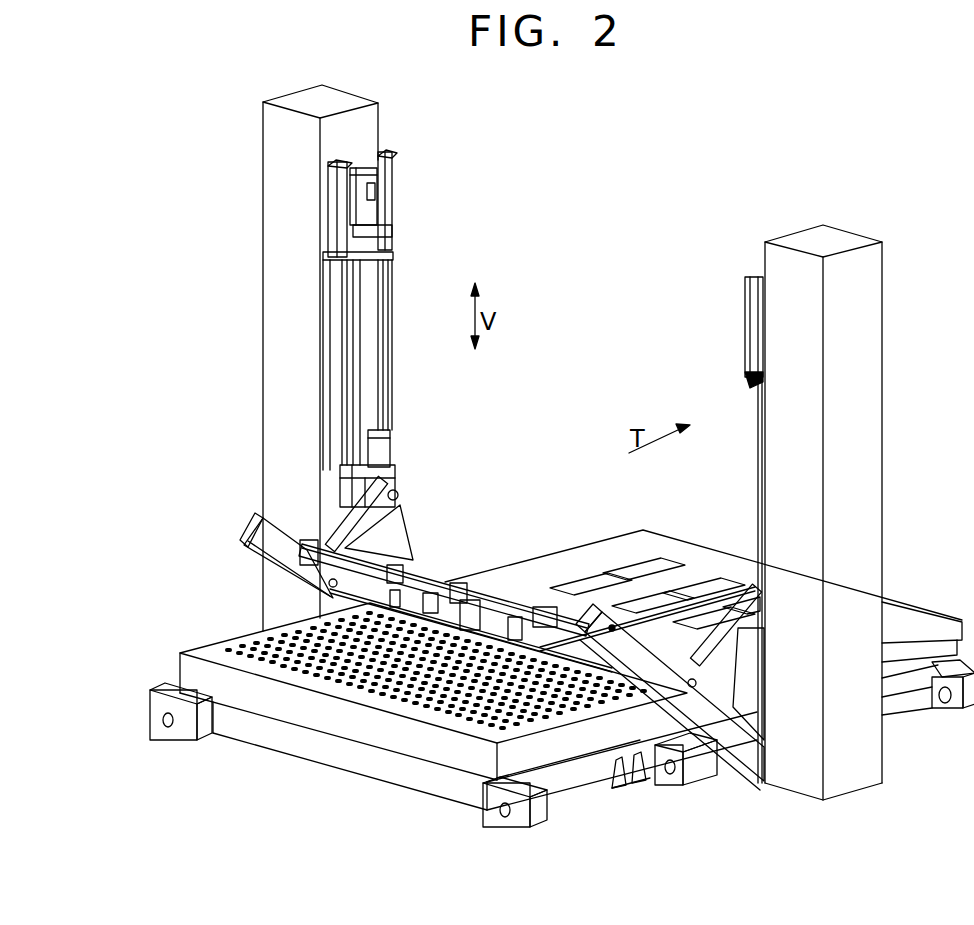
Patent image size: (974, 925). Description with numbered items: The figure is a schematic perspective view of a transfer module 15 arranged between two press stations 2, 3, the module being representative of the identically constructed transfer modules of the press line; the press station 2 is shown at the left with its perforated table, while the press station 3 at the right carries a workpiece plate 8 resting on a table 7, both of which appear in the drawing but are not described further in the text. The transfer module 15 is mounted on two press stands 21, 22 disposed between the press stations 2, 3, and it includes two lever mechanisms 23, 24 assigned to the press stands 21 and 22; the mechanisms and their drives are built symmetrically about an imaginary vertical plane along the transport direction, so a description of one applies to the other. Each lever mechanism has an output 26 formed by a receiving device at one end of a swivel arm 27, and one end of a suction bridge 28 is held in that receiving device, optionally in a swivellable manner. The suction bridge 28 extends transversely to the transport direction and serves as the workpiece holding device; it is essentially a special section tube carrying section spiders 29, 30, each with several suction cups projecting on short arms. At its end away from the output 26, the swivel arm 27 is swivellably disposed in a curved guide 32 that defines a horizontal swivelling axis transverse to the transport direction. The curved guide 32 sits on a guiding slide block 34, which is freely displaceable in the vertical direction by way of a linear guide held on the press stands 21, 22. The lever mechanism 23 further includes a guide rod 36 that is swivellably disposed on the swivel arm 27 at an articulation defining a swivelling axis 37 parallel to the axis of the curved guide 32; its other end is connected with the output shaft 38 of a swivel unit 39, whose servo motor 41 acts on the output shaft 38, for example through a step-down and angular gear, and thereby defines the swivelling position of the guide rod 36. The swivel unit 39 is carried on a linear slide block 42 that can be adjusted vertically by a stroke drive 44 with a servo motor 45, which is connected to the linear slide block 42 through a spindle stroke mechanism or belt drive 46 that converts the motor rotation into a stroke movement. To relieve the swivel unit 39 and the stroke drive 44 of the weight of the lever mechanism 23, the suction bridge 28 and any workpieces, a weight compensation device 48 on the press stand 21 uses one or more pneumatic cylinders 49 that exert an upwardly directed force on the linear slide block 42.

The press station 2 is at (200, 604).
The press station 3 is at (580, 486).
The perforated work table 7 is at (307, 710).
The workpiece plate 8 is at (709, 622).
The transfer module 15 is at (116, 442).
The press stand 21 is at (308, 105).
The press stand 22 is at (863, 293).
The lever mechanism 23 is at (294, 420).
The lever mechanism 24 is at (727, 517).
The output 26 is at (258, 538).
The swivel arm 27 is at (270, 558).
The suction bridge 28 is at (444, 587).
The section spider 29 is at (400, 603).
The section spider 30 is at (477, 625).
The curved guide 32 is at (400, 572).
The guiding slide block 34 is at (393, 523).
The guide rod 36 is at (367, 525).
The swivelling axis 37 is at (377, 595).
The output shaft 38 is at (397, 490).
The swivel unit 39 is at (374, 450).
The servo motor 41 is at (383, 440).
The linear slide block 42 is at (340, 468).
The stroke drive 44 is at (402, 258).
The servo motor 45 is at (383, 168).
The spindle stroke mechanism or belt drive 46 is at (363, 368).
The weight compensation device 48 is at (331, 268).
The pneumatic cylinder 49 is at (338, 207).